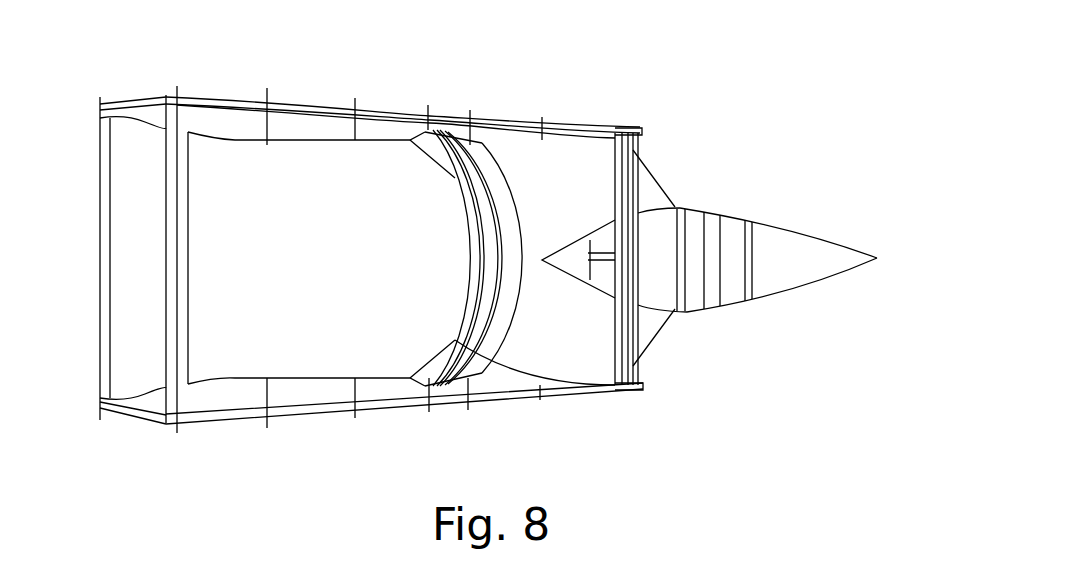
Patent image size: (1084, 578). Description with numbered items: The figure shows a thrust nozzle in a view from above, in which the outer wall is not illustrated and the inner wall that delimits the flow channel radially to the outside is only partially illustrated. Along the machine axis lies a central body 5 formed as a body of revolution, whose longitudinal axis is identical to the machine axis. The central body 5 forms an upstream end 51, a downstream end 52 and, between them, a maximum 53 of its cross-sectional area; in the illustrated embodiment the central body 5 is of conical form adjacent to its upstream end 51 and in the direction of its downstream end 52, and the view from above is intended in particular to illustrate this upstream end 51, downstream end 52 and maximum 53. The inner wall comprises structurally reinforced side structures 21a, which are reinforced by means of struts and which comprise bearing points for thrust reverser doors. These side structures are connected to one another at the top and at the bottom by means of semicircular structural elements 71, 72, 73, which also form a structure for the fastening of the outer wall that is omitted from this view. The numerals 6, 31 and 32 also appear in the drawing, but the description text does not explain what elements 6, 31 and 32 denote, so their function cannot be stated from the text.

The air inlet 6 is at (107, 375).
The structural element 71 is at (178, 223).
The reinforced side structure 21a is at (320, 397).
The structural element 72 is at (482, 150).
The upper casing portion 31 is at (583, 150).
The structural element 73 is at (633, 147).
The maximum of cross-sectional area 53 is at (693, 207).
The central body 5 is at (800, 240).
The downstream end 52 is at (878, 258).
The upstream end 51 is at (542, 260).
The nozzle portion 32 is at (553, 357).